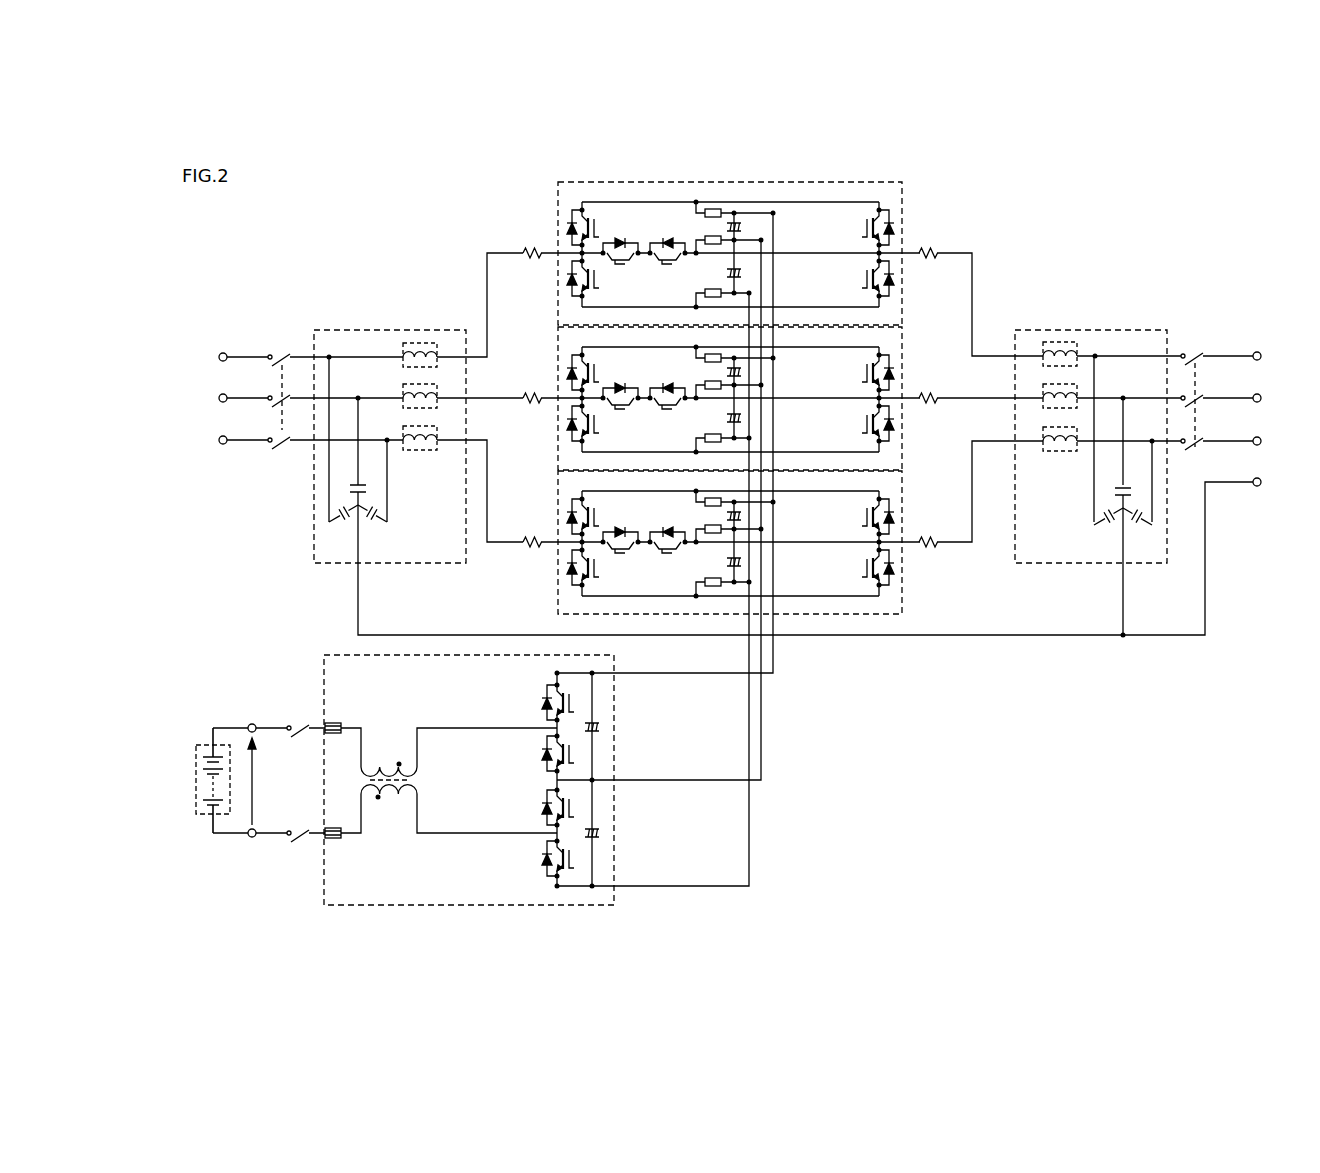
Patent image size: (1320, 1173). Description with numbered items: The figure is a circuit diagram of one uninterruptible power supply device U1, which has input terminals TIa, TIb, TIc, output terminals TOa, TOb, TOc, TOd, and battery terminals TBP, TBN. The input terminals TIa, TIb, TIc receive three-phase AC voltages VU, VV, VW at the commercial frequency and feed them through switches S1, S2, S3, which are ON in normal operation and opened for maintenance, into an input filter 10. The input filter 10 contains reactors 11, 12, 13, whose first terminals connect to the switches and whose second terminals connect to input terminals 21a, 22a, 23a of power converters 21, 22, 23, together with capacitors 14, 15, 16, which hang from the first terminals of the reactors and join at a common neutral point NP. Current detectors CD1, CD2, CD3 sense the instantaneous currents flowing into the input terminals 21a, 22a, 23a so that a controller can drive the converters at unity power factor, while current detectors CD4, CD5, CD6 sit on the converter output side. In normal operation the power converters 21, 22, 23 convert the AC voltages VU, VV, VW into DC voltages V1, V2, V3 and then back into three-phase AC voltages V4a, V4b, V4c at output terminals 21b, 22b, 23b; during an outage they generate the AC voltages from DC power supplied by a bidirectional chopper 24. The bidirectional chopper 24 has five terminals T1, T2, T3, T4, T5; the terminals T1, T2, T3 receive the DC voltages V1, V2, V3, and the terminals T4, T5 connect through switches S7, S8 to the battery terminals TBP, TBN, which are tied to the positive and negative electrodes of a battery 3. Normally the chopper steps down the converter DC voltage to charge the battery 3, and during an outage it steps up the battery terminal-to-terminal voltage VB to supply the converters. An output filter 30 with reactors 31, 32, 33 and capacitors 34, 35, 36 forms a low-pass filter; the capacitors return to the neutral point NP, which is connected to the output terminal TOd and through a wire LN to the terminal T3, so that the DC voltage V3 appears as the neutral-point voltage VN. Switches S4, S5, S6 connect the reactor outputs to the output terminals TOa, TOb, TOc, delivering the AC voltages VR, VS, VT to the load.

The uninterruptible power supply device U1 is at (335, 231).
The battery 3 is at (200, 745).
The input filter 10 is at (393, 330).
The reactor 11 is at (427, 361).
The reactor 12 is at (427, 402).
The reactor 13 is at (427, 444).
The capacitor 14 is at (342, 523).
The capacitor 15 is at (355, 483).
The capacitor 16 is at (374, 523).
The power converter 21 is at (557, 198).
The input terminal 21a is at (558, 256).
The output terminal 21b is at (902, 256).
The power converter 22 is at (557, 343).
The input terminal 22a is at (558, 401).
The output terminal 22b is at (902, 401).
The power converter 23 is at (557, 487).
The input terminal 23a is at (558, 545).
The output terminal 23b is at (902, 545).
The bidirectional chopper 24 is at (324, 666).
The output filter 30 is at (1090, 330).
The reactor 31 is at (1055, 362).
The reactor 32 is at (1055, 404).
The reactor 33 is at (1055, 447).
The capacitor 34 is at (1107, 523).
The capacitor 35 is at (1117, 486).
The capacitor 36 is at (1140, 523).
The switch S1 is at (289, 355).
The switch S2 is at (289, 408).
The switch S3 is at (289, 451).
The switch S4 is at (1199, 352).
The switch S5 is at (1203, 406).
The switch S6 is at (1203, 449).
The switch S7 is at (299, 735).
The switch S8 is at (300, 834).
The current detector CD1 is at (523, 250).
The current detector CD2 is at (523, 395).
The current detector CD3 is at (523, 539).
The current detector CD4 is at (936, 250).
The current detector CD5 is at (936, 395).
The current detector CD6 is at (936, 539).
The terminal T1 is at (614, 673).
The terminal T2 is at (614, 886).
The terminal T3 is at (614, 780).
The terminal T4 is at (326, 727).
The terminal T5 is at (326, 834).
The battery terminal TBP is at (252, 724).
The battery terminal TBN is at (252, 837).
The terminal-to-terminal voltage VB is at (264, 781).
The neutral point NP is at (357, 616).
The wire LN is at (762, 730).
The DC voltage V1 is at (705, 675).
The DC voltage V2 is at (705, 888).
The DC voltage V3 is at (705, 782).
The AC voltage V4a is at (972, 326).
The AC voltage V4b is at (958, 396).
The AC voltage V4c is at (972, 470).
The AC voltage VU is at (207, 357).
The AC voltage VV is at (207, 398).
The AC voltage VW is at (206, 440).
The AC voltage VR is at (1271, 356).
The AC voltage VS is at (1271, 398).
The AC voltage VT is at (1271, 441).
The neutral-point voltage VN is at (1272, 482).
The input terminal TIa is at (226, 352).
The input terminal TIb is at (226, 403).
The input terminal TIc is at (223, 446).
The output terminal TOa is at (1257, 351).
The output terminal TOb is at (1257, 393).
The output terminal TOc is at (1253, 485).
The output terminal TOd is at (1260, 488).